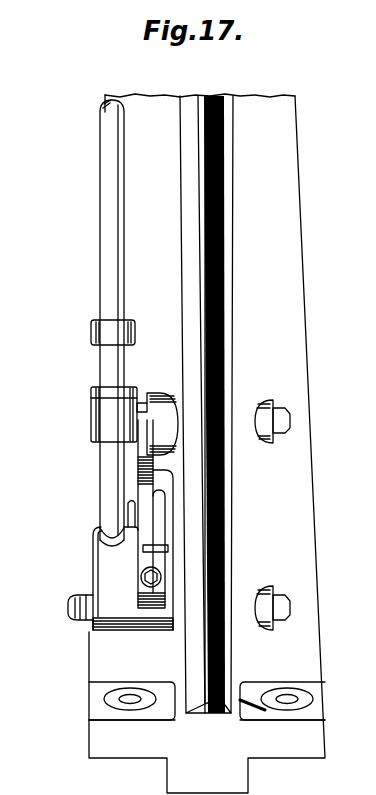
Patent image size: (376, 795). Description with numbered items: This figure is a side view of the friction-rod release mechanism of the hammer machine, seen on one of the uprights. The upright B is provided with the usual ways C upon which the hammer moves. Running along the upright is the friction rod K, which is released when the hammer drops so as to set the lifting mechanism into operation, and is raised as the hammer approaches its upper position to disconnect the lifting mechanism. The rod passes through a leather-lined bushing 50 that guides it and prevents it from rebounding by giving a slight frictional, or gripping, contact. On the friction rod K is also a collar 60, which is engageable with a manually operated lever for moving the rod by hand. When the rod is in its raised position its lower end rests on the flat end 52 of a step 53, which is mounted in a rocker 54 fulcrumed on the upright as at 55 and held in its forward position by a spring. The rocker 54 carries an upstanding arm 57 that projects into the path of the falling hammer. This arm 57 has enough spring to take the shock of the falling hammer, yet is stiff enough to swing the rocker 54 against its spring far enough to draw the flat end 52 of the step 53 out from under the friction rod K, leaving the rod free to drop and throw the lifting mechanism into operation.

The upright B is at (294, 273).
The ways C is at (218, 552).
The friction rod K is at (108, 285).
The collar 60 is at (92, 334).
The leather-lined bushing 50 is at (100, 413).
The upstanding arm 57 is at (140, 481).
The rocker 54 is at (95, 576).
The flat end of the step 52 is at (106, 546).
The step 53 is at (168, 548).
The fulcrum 55 is at (78, 614).